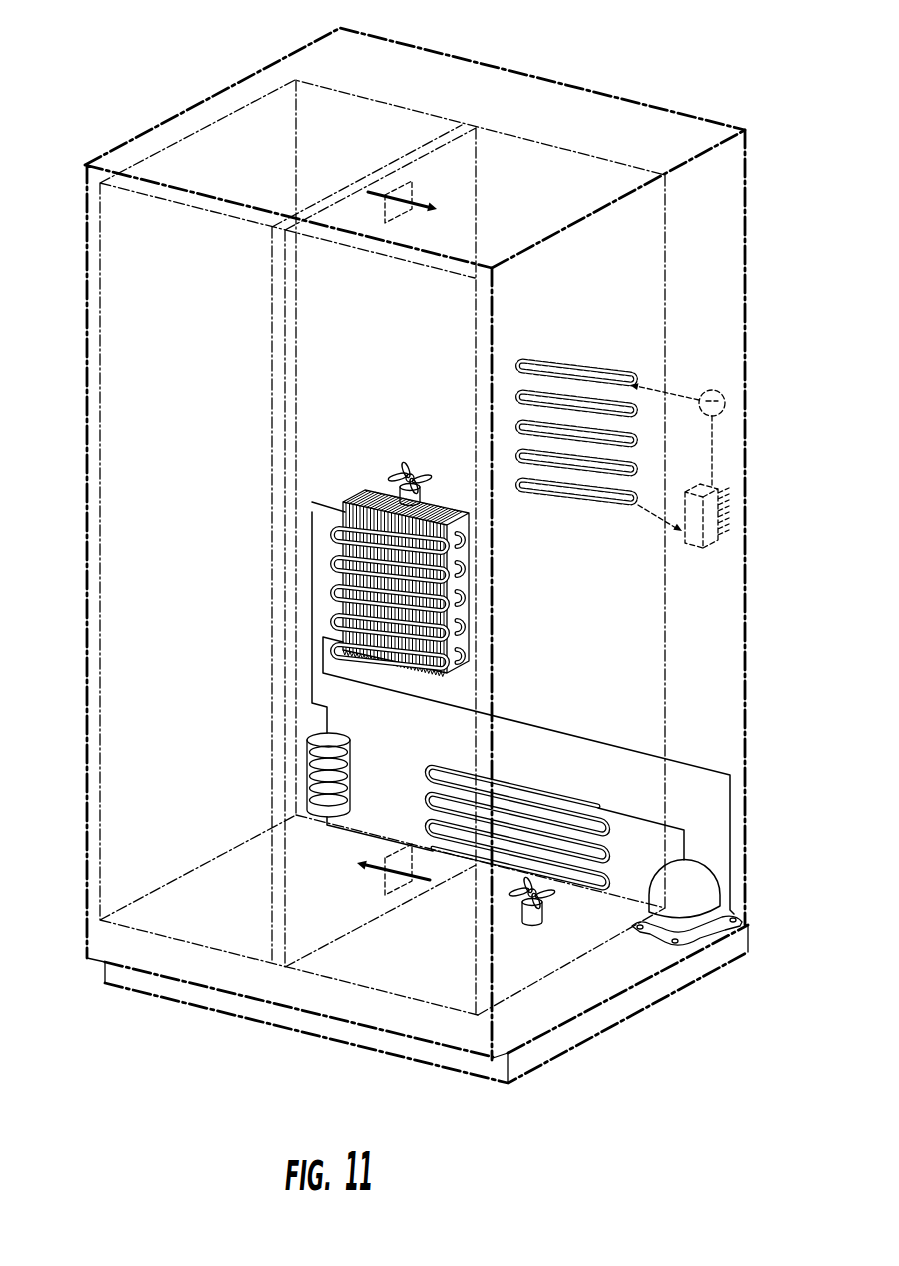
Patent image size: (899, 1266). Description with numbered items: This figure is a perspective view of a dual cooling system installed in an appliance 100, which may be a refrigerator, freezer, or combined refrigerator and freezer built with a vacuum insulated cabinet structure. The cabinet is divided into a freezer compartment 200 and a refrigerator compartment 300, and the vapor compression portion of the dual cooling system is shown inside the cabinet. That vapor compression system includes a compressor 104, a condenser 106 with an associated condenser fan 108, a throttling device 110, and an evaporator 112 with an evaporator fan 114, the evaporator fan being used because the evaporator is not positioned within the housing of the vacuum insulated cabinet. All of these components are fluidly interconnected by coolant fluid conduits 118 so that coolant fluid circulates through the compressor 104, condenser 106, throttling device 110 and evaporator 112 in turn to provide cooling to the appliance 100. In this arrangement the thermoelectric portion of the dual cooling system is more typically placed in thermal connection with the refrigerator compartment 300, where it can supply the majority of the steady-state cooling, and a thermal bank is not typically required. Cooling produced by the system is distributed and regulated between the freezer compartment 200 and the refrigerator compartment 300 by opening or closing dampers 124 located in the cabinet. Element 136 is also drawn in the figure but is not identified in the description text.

The appliance 100 is at (146, 62).
The freezer compartment 200 is at (122, 298).
The refrigerator compartment 300 is at (563, 190).
The compressor 104 is at (690, 898).
The condenser 106 is at (590, 895).
The condenser fan 108 is at (536, 920).
The throttling device 110 is at (307, 770).
The evaporator 112 is at (330, 557).
The evaporator fan 114 is at (392, 482).
The coolant fluid conduits 118 is at (708, 768).
The dampers 124 is at (406, 186).
The sensor / controller 136 is at (725, 401).